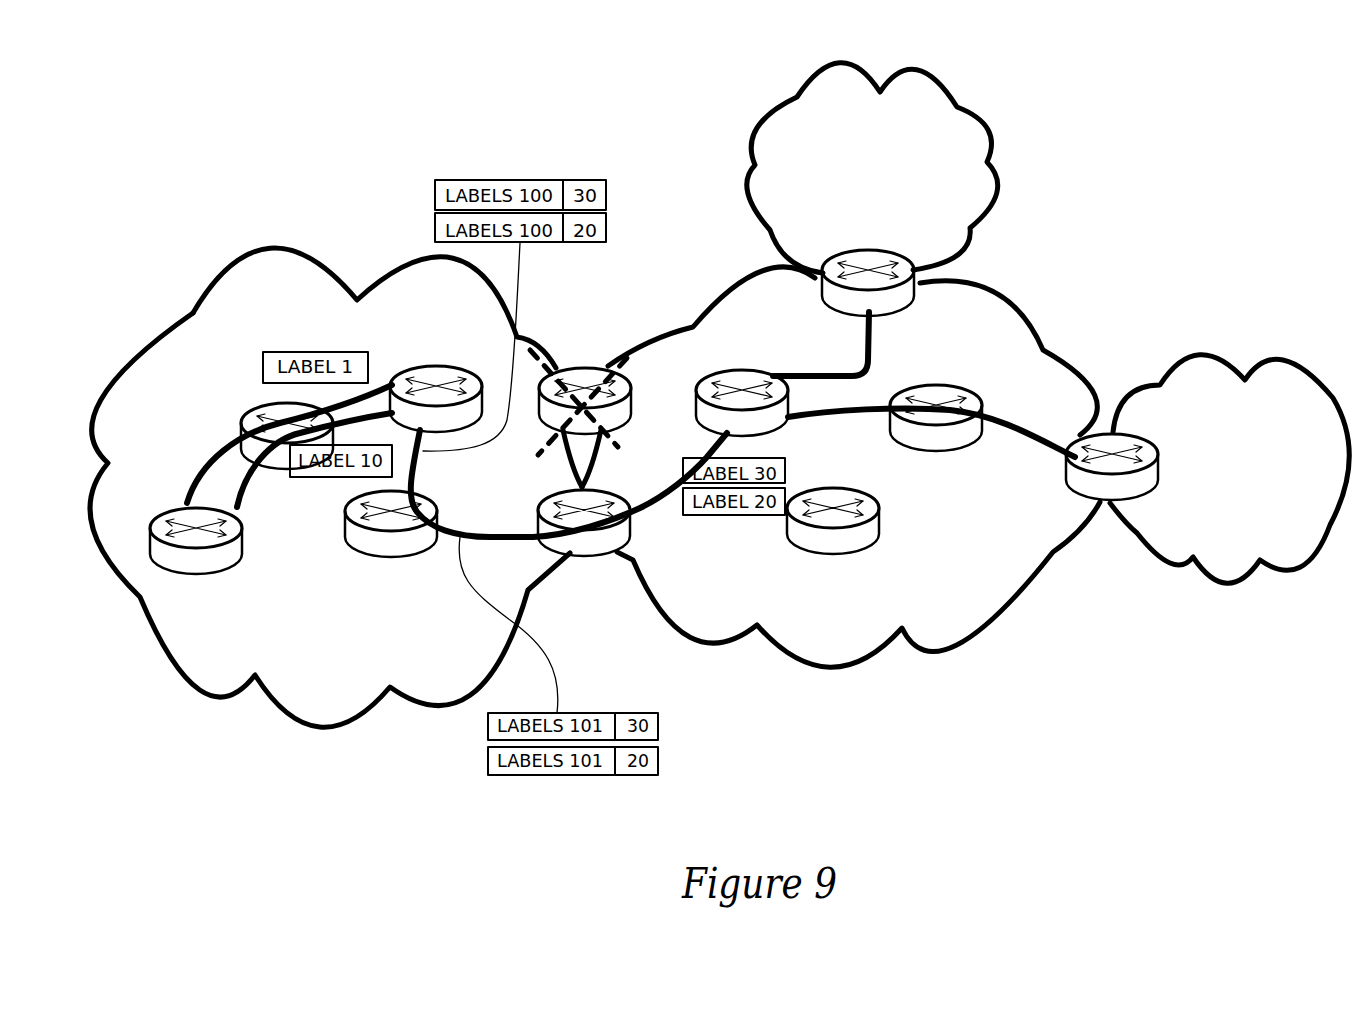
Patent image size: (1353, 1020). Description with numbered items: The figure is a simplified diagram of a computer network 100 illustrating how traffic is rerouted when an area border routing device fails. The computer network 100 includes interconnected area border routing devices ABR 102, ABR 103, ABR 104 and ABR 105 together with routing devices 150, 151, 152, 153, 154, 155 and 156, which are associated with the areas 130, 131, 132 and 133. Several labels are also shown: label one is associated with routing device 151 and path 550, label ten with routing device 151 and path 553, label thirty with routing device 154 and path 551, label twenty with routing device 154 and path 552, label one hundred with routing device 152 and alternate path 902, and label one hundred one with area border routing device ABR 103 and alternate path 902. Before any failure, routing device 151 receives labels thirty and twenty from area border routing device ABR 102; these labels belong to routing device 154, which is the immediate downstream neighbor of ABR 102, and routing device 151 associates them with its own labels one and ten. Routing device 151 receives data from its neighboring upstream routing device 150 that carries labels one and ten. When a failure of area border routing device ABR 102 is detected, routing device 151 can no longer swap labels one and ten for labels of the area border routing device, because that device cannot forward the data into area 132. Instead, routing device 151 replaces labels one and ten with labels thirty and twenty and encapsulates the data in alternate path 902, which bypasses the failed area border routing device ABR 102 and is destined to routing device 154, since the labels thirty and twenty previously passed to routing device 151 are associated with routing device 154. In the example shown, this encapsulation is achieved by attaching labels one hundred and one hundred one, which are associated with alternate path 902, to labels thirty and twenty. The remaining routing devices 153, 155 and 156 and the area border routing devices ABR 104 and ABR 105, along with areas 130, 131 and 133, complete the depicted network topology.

The computer network 100 is at (1135, 131).
The area border routing device ABR102 102 is at (568, 365).
The area border routing device ABR103 103 is at (582, 558).
The area border routing device ABR104 104 is at (920, 280).
The area border routing device ABR105 105 is at (1103, 517).
The area A130 130 is at (336, 487).
The area A131 131 is at (872, 168).
The area A132 132 is at (841, 467).
The area A133 133 is at (1229, 469).
The routing device 150 is at (242, 430).
The routing device 151 is at (415, 365).
The routing device 152 is at (409, 554).
The routing device 153 is at (214, 568).
The routing device 154 is at (760, 431).
The routing device 155 is at (851, 548).
The routing device 156 is at (954, 445).
The path 550 is at (203, 475).
The path 551 is at (868, 345).
The path 552 is at (1052, 448).
The path 553 is at (242, 485).
The alternate path 902 is at (655, 513).